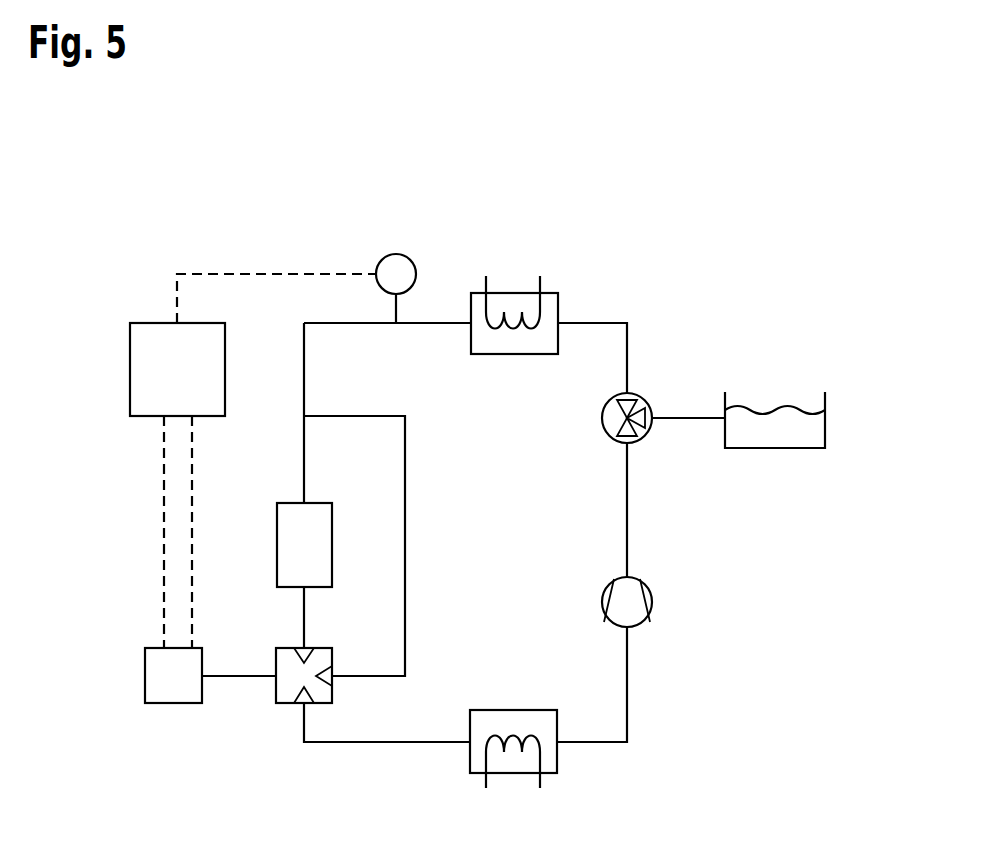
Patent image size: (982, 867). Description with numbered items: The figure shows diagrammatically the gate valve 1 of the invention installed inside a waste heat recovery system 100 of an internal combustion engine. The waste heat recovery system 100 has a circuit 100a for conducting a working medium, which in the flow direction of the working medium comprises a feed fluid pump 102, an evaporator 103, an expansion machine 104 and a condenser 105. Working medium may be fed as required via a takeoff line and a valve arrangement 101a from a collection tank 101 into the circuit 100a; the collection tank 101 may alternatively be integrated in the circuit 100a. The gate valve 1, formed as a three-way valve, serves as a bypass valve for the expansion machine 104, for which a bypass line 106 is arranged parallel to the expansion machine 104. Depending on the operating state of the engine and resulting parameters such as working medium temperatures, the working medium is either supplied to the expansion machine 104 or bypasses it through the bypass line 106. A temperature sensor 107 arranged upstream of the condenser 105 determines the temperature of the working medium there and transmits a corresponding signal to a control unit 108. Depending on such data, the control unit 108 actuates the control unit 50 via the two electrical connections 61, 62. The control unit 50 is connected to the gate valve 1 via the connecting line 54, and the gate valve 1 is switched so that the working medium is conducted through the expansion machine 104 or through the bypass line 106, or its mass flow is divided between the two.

The gate valve 1 is at (283, 688).
The control unit 50 is at (173, 692).
The connecting line 54 is at (235, 672).
The electrical connection 61 is at (195, 477).
The electrical connection 62 is at (162, 477).
The waste heat recovery system 100 is at (702, 255).
The circuit 100a is at (648, 677).
The collection tank 101 is at (768, 435).
The valve arrangement 101a is at (602, 428).
The feed fluid pump 102 is at (652, 610).
The evaporator 103 is at (513, 767).
The expansion machine 104 is at (310, 548).
The condenser 105 is at (512, 297).
The bypass line 106 is at (405, 488).
The temperature sensor 107 is at (395, 256).
The control unit 108 is at (143, 367).